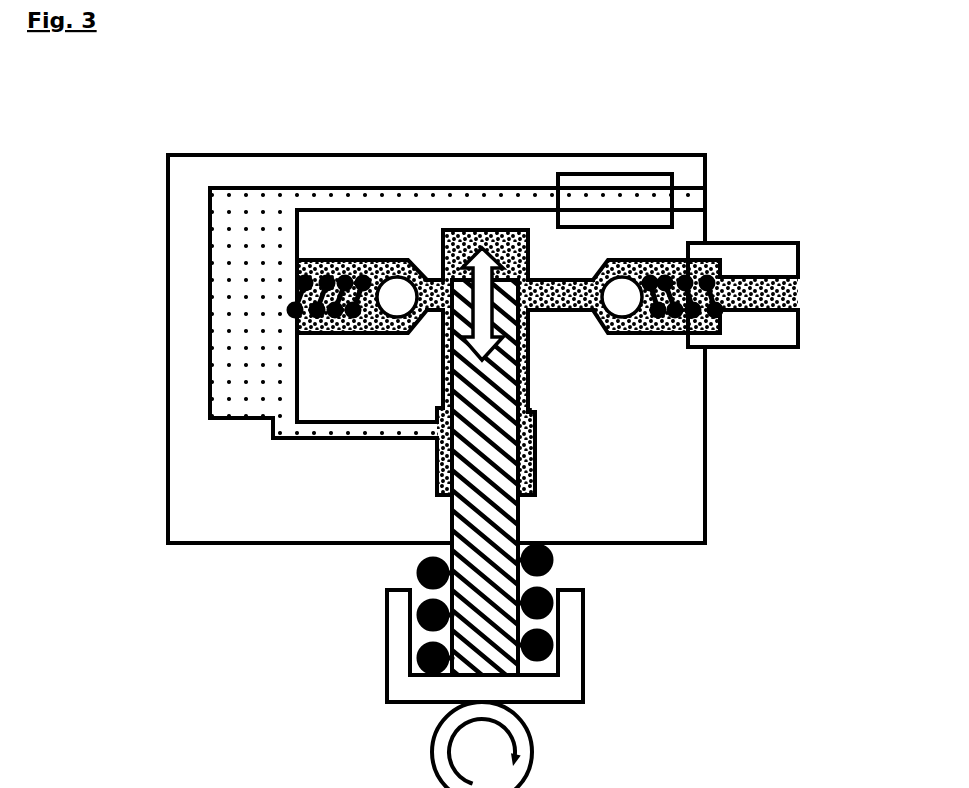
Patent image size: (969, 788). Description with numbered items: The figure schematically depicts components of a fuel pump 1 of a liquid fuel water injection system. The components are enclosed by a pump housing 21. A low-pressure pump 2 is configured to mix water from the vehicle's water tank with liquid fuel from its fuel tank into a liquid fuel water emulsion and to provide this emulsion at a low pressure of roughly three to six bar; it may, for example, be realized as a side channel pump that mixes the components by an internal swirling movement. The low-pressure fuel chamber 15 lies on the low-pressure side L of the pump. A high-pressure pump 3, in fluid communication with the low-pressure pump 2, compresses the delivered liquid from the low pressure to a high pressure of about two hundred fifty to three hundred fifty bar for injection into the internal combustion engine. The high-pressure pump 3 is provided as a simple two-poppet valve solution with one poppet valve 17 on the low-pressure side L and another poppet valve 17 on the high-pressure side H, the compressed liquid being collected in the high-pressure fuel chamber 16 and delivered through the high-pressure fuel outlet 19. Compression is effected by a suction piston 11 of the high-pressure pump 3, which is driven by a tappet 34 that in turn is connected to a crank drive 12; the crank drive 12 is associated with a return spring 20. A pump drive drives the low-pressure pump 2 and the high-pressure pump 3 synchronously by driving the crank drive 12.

The fuel pump 1 is at (487, 439).
The low-pressure pump 2 is at (627, 180).
The high-pressure pump 3 is at (572, 388).
The suction piston 11 is at (472, 383).
The crank drive 12 is at (440, 757).
The low-pressure fuel chamber 15 is at (263, 215).
The high-pressure fuel chamber 16 is at (782, 320).
The poppet valve 17 is at (505, 350).
The high-pressure fuel outlet 19 is at (806, 290).
The return spring 20 is at (550, 558).
The pump housing 21 is at (706, 470).
The tappet 34 is at (576, 643).
The high-pressure side H is at (674, 348).
The low-pressure side L is at (415, 272).